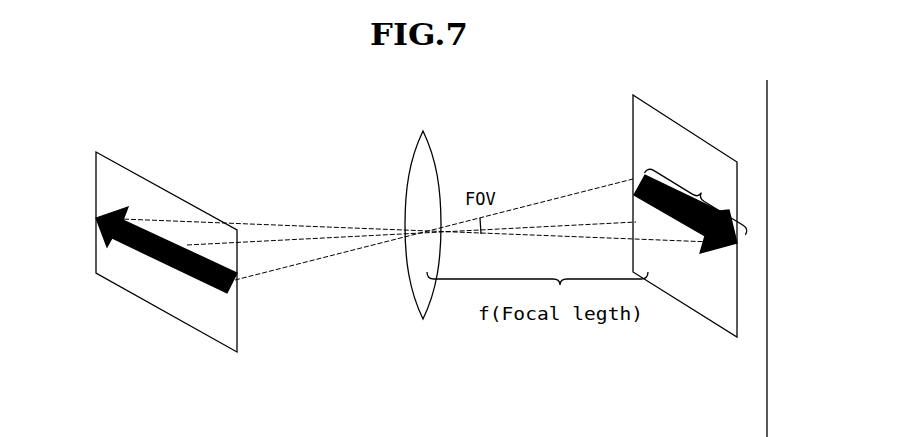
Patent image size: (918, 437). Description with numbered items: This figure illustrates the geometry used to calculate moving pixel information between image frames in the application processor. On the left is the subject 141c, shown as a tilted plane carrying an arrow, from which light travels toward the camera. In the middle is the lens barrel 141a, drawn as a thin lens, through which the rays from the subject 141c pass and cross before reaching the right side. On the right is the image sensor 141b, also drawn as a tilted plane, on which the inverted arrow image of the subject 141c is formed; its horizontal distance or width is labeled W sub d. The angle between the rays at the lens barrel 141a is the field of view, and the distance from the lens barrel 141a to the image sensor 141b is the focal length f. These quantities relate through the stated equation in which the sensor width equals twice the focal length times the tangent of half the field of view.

The lens barrel 141a is at (422, 320).
The image sensor 141b is at (722, 328).
The subject 141c is at (218, 343).